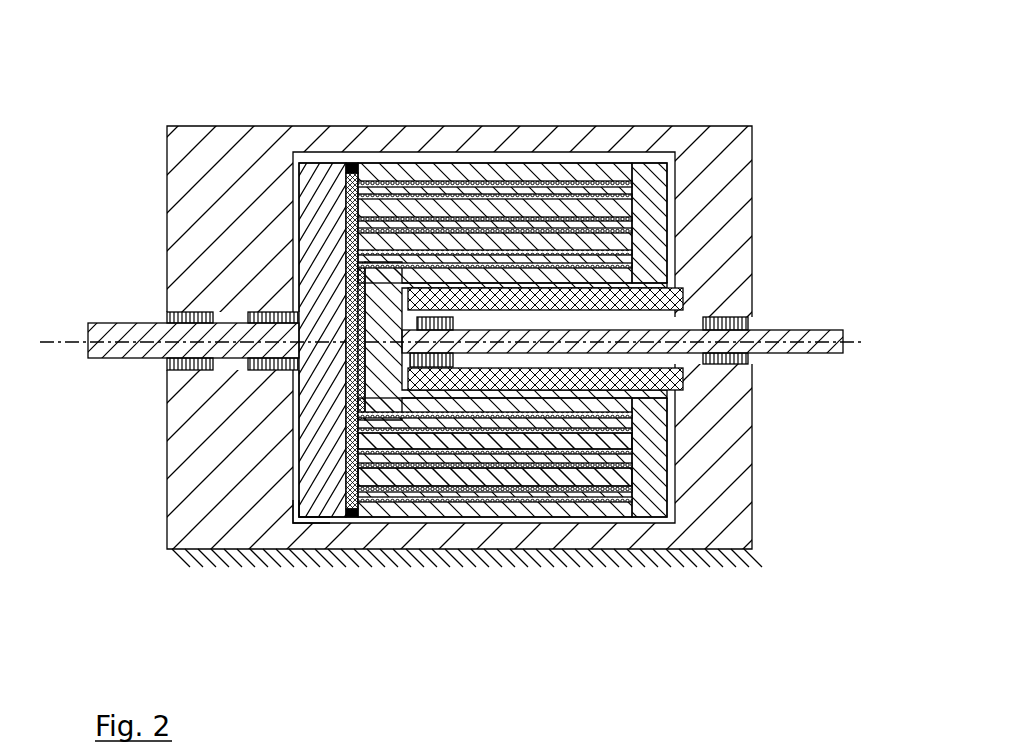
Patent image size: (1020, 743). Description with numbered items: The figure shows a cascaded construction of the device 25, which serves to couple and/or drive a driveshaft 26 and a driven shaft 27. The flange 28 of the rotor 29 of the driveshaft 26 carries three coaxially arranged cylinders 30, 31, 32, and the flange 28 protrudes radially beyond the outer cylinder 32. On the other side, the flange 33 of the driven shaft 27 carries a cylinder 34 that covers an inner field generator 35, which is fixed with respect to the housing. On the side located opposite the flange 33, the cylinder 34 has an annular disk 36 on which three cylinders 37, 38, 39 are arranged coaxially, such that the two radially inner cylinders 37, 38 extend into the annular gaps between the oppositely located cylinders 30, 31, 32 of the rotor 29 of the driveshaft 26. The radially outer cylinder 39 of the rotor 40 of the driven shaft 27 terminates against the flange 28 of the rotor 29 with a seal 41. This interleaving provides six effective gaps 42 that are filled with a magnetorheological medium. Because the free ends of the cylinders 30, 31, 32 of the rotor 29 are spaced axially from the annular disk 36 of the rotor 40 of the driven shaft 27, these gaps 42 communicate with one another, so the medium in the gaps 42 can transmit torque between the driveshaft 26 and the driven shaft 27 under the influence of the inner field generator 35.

The device 25 is at (147, 108).
The driveshaft 26 is at (145, 333).
The driven shaft 27 is at (810, 333).
The flange 28 is at (313, 183).
The rotor 29 is at (325, 522).
The cylinder 30 is at (385, 422).
The cylinder 31 is at (417, 458).
The outer cylinder 32 is at (455, 490).
The flange 33 is at (345, 283).
The cylinder 34 is at (518, 166).
The inner field generator 35 is at (685, 384).
The annular disk 36 is at (657, 258).
The cylinder 37 is at (598, 240).
The cylinder 38 is at (553, 213).
The radially outer cylinder 39 is at (519, 172).
The rotor 40 is at (670, 207).
The seal 41 is at (350, 166).
The effective gaps 42 is at (607, 498).